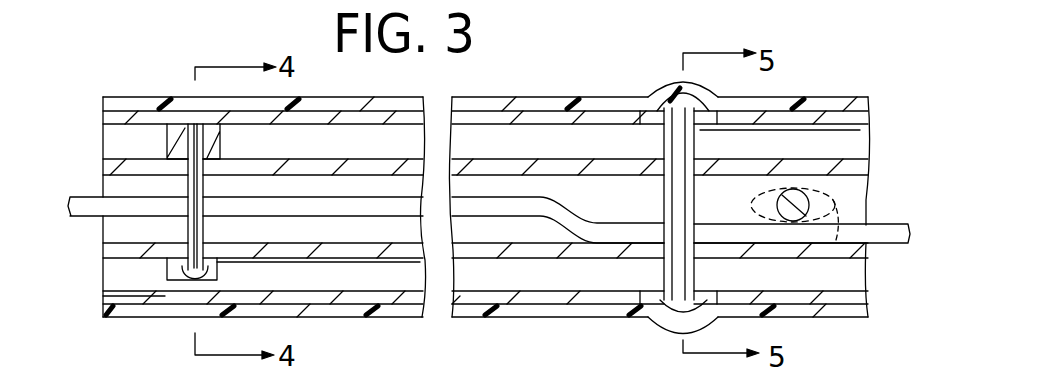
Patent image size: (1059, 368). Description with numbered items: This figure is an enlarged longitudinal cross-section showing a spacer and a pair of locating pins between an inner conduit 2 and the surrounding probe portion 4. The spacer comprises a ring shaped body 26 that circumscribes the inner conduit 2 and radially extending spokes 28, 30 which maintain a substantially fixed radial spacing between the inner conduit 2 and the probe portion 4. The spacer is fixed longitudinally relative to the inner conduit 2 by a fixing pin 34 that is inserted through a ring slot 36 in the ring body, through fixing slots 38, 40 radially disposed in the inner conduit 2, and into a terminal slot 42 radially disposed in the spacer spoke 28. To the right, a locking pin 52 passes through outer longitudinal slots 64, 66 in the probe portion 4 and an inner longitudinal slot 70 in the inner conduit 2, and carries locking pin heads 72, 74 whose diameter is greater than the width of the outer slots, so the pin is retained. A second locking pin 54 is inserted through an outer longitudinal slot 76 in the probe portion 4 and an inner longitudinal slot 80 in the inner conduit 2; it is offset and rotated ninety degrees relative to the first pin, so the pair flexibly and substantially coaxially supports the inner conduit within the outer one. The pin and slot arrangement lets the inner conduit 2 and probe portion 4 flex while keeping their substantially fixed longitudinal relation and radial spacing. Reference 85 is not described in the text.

The inner conduit 2 is at (143, 246).
The probe portion 4 is at (522, 303).
The ring shaped body 26 is at (167, 280).
The spoke 28 is at (171, 158).
The spoke 30 is at (221, 266).
The fixing pin 34 is at (188, 193).
The ring slot 36 is at (185, 278).
The fixing slot 38 is at (208, 272).
The fixing slot 40 is at (171, 172).
The terminal slot 42 is at (207, 138).
The locking pin 52 is at (664, 142).
The locking pin 54 is at (836, 212).
The outer longitudinal slot 64 is at (722, 93).
The outer longitudinal slot 66 is at (705, 277).
The inner longitudinal slot 70 is at (660, 262).
The locking pin head 72 is at (652, 95).
The locking pin head 74 is at (660, 323).
The outer longitudinal slot 76 is at (835, 235).
The inner longitudinal slot 80 is at (750, 194).
The skin layer 85 is at (845, 153).